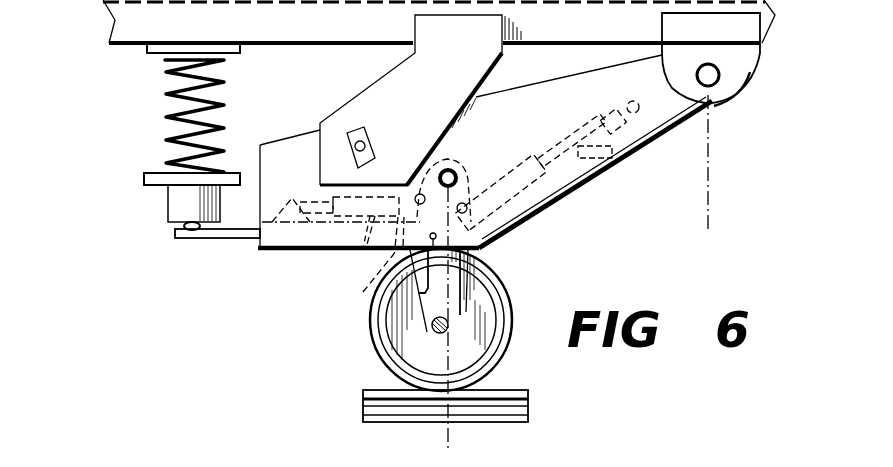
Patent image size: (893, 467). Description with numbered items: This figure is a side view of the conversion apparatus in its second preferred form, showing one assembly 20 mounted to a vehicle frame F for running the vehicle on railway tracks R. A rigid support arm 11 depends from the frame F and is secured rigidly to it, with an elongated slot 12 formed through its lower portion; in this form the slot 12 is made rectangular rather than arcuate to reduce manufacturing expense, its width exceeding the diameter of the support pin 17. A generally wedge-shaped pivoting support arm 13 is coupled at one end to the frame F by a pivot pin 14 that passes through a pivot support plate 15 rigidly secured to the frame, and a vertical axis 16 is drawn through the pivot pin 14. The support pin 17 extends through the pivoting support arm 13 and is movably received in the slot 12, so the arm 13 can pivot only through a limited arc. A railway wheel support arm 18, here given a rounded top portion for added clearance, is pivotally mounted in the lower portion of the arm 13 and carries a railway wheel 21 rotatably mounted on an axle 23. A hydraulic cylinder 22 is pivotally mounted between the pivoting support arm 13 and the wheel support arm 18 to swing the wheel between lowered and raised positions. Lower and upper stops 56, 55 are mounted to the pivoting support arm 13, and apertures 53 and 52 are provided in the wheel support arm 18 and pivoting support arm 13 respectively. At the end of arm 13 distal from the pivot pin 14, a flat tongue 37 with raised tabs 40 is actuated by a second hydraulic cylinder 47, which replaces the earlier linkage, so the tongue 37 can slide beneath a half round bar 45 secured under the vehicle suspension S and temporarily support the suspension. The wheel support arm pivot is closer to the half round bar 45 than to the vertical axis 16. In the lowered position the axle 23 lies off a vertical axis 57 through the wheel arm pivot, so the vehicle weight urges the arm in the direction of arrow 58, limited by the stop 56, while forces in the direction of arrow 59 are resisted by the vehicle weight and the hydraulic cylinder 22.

The vehicle frame F is at (773, 13).
The vehicle suspension S is at (159, 107).
The railway tracks R is at (530, 407).
The rigid support arm 11 is at (362, 108).
The elongated slot 12 is at (367, 149).
The pivoting support arm 13 is at (522, 232).
The pivot pin 14 is at (697, 74).
The pivot support plate 15 is at (716, 46).
The vertical axis 16 is at (713, 209).
The support pin 17 is at (371, 139).
The railway wheel support arm 18 is at (450, 302).
The first assembly 20 is at (655, 257).
The railway wheel 21 is at (386, 332).
The hydraulic cylinder 22 is at (577, 127).
The axle 23 is at (432, 331).
The tongue 37 is at (220, 238).
The raised tabs 40 is at (293, 200).
The half round bar 45 is at (164, 236).
The hydraulic cylinder 47 is at (368, 250).
The aperture 52 is at (466, 190).
The aperture 53 is at (451, 168).
The upper stop 55 is at (613, 170).
The lower stop 56 is at (383, 262).
The vertical axis 57 is at (453, 448).
The arrow 58 is at (360, 385).
The arrow 59 is at (519, 372).